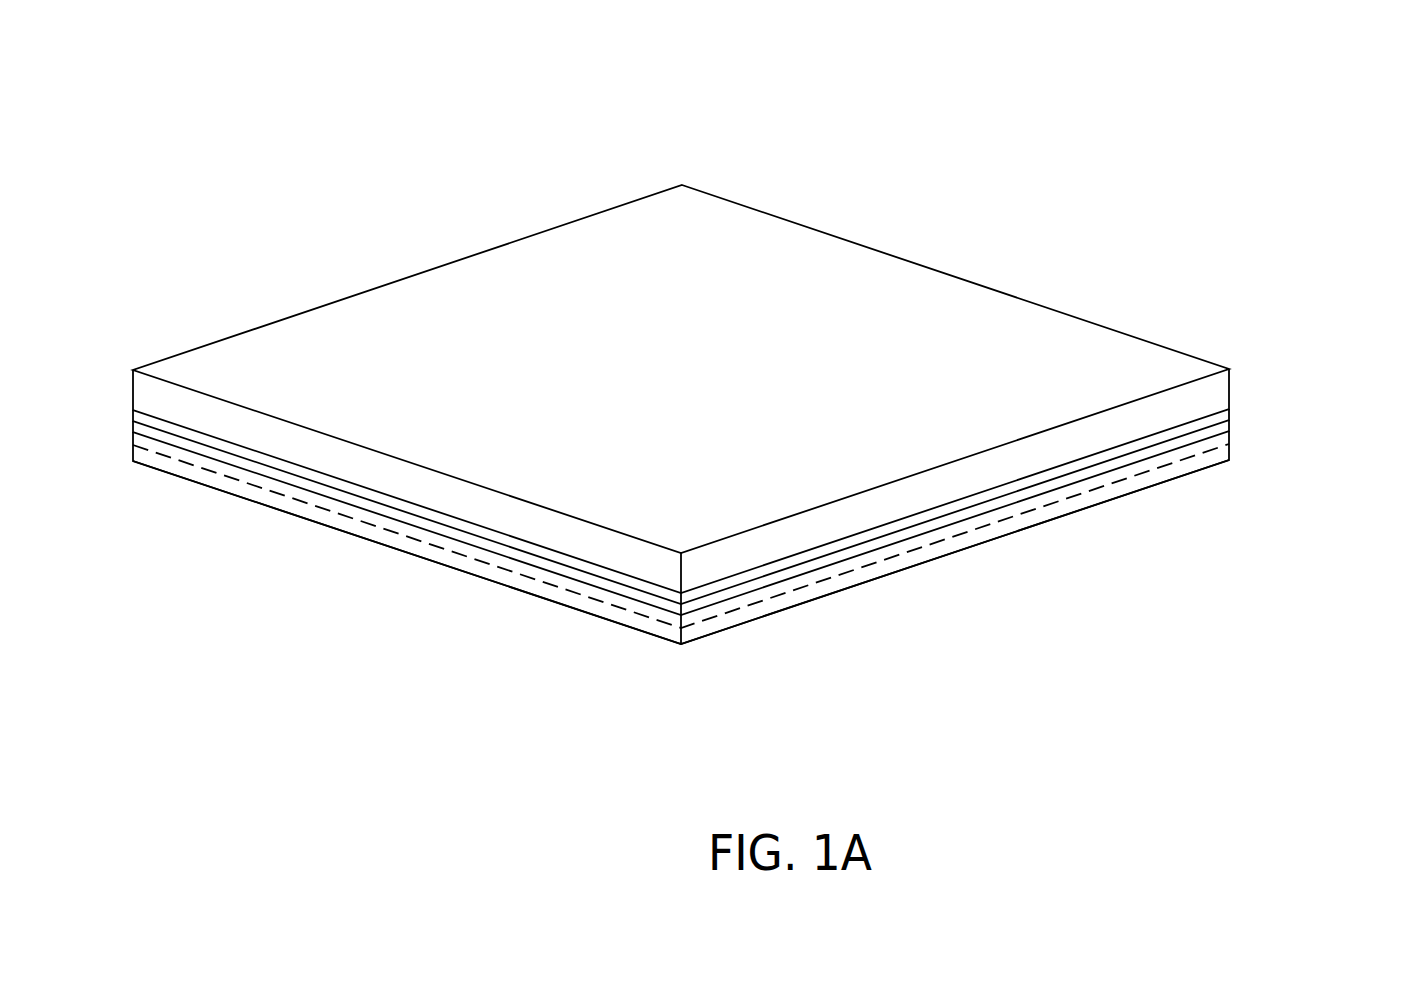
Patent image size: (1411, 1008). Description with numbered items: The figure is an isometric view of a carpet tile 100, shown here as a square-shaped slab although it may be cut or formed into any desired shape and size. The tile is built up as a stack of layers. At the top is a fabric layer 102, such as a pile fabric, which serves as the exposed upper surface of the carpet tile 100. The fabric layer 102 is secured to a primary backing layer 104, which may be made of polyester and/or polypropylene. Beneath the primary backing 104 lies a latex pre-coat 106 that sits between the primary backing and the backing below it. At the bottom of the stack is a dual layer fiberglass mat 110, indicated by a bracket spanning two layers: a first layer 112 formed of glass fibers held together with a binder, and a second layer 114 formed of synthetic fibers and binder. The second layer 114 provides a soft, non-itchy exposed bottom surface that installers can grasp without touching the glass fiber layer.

The carpet tile 100 is at (338, 147).
The fabric layer 102 is at (1230, 380).
The primary backing layer 104 is at (1230, 417).
The latex pre-coat 106 is at (1230, 428).
The dual layer fiberglass mat 110 is at (128, 432).
The first layer 112 is at (1135, 468).
The second layer 114 is at (1023, 522).